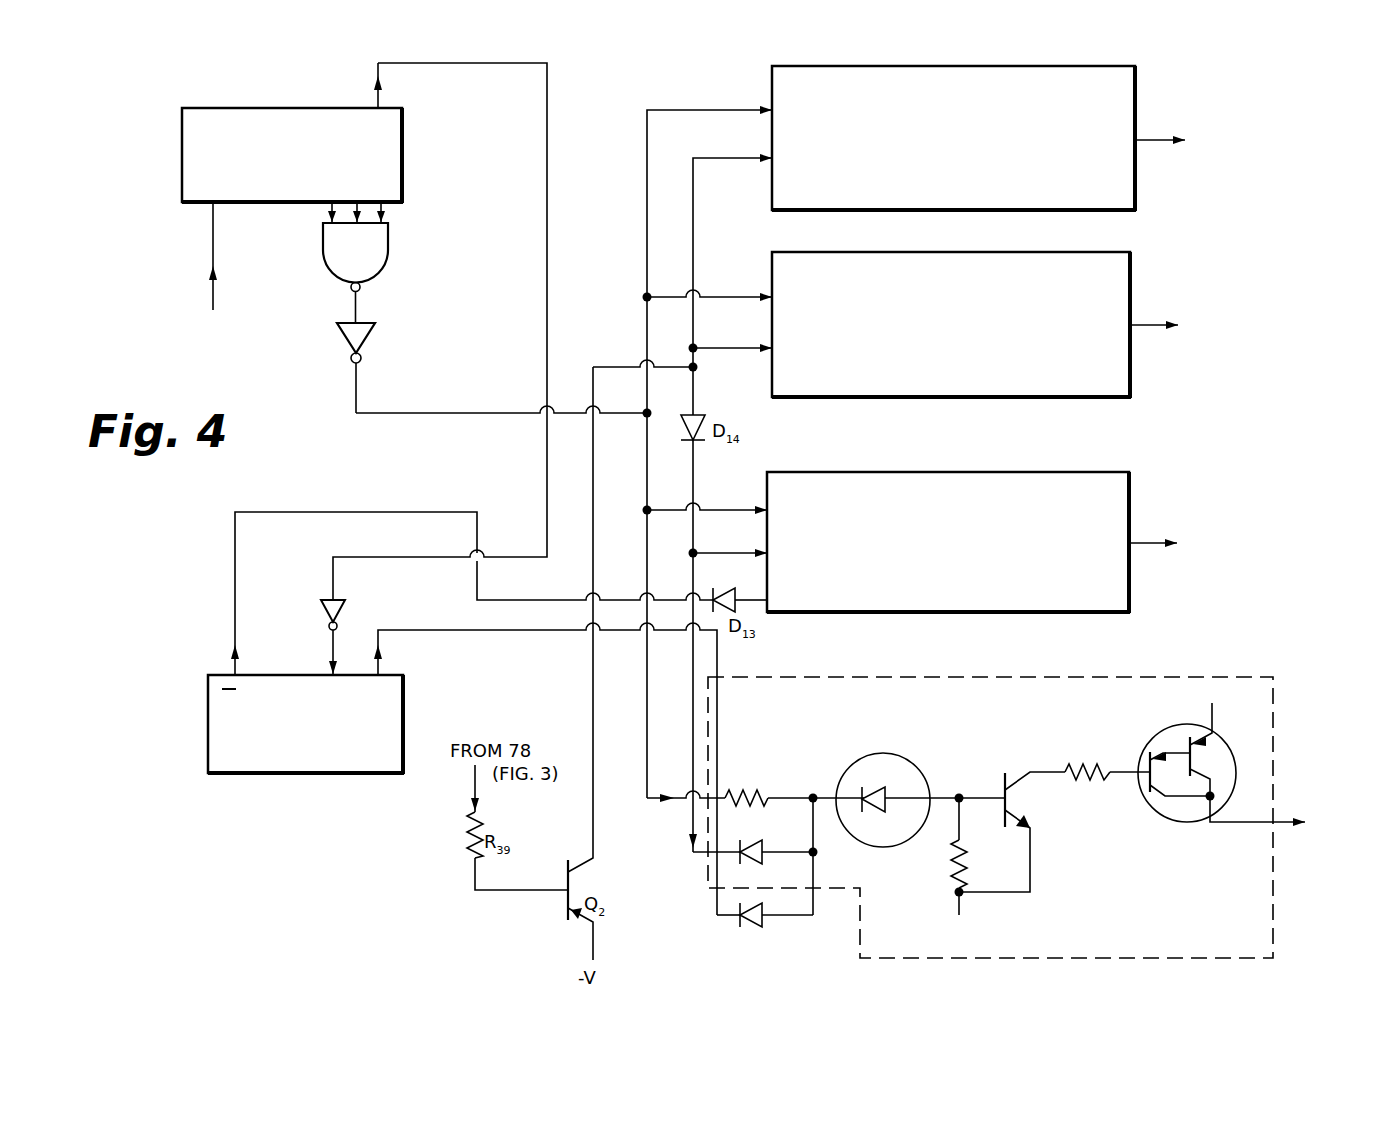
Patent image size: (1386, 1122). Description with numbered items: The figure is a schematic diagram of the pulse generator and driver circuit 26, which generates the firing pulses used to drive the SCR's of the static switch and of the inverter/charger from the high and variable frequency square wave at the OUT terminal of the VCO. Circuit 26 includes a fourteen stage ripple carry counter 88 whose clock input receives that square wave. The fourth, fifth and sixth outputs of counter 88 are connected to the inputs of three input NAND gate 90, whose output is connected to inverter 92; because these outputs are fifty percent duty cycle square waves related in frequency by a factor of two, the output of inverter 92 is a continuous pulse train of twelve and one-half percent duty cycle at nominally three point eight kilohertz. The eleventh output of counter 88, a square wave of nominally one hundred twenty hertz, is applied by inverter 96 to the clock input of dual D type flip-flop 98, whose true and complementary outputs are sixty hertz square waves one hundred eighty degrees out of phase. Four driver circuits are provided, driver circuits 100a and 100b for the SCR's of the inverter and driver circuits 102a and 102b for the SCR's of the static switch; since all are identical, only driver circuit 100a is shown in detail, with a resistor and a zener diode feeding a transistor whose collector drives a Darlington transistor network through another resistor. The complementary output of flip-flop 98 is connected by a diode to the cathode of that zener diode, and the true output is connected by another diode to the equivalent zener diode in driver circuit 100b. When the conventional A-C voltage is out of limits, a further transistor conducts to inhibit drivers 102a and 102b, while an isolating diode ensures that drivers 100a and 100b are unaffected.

The pulse generator and driver circuit 26 is at (420, 463).
The ripple carry counter 88 is at (270, 108).
The NAND gate 90 is at (388, 238).
The inverter 92 is at (370, 343).
The inverter 96 is at (344, 612).
The dual D type flip-flop 98 is at (208, 742).
The driver circuit 100a is at (998, 677).
The driver circuit 100b is at (1108, 472).
The driver circuit 102a is at (1105, 252).
The driver circuit 102b is at (1120, 66).